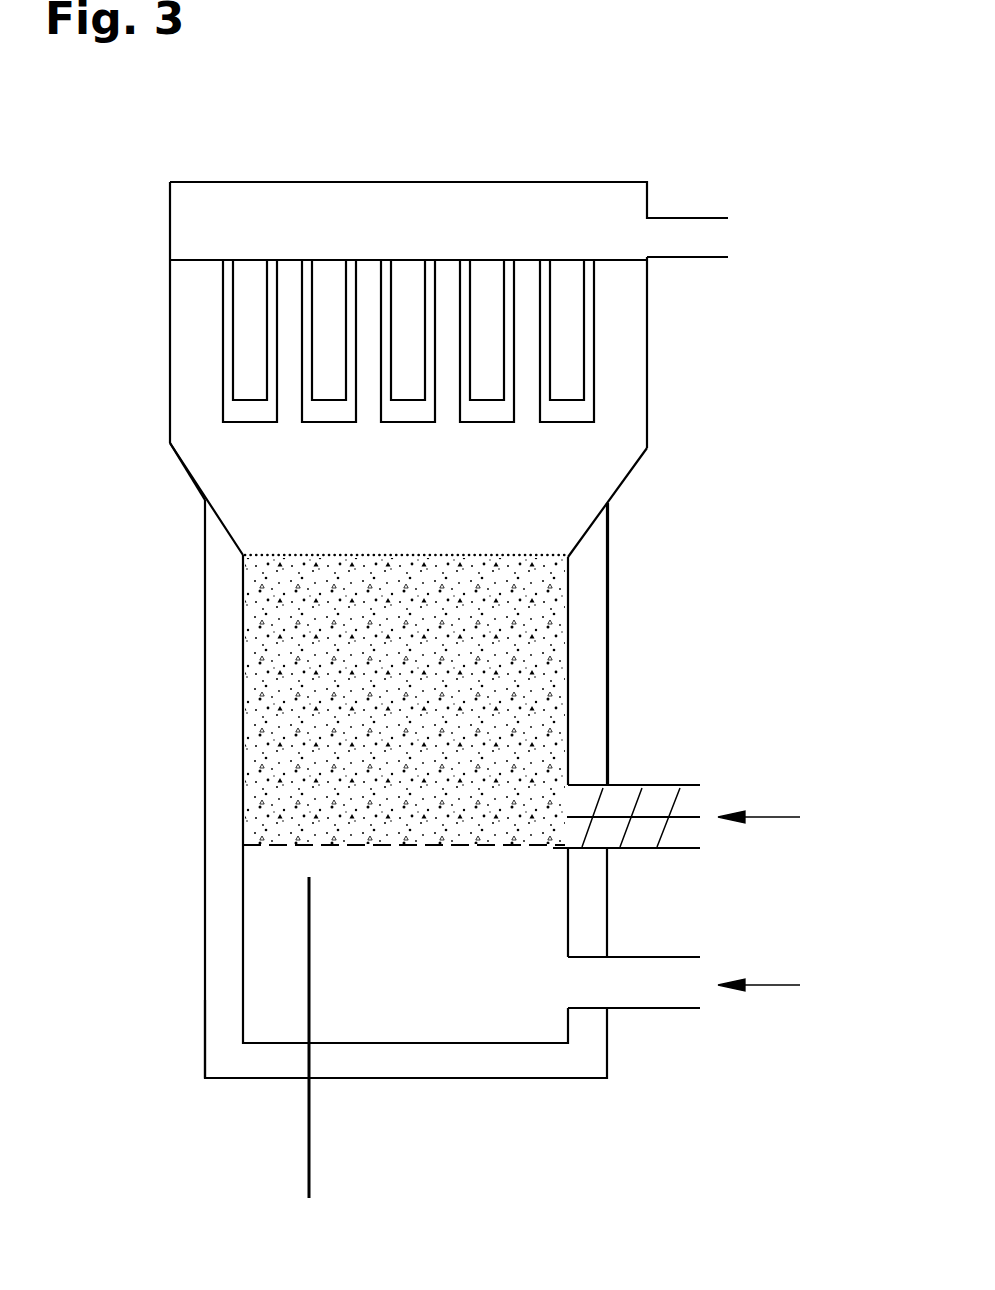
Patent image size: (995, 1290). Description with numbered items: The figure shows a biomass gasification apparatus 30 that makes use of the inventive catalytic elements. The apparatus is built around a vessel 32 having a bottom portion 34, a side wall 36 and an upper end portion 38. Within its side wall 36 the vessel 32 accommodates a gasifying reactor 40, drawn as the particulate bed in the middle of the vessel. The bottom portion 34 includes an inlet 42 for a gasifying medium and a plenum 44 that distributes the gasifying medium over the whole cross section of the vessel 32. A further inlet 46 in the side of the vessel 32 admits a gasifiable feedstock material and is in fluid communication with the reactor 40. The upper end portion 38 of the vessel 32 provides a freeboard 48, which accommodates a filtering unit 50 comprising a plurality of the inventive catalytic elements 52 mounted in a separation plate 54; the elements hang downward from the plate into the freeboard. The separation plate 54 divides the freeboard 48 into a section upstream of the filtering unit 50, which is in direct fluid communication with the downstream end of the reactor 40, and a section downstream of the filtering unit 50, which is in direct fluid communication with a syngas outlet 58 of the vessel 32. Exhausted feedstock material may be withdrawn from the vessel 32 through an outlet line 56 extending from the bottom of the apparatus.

The gasification apparatus 30 is at (692, 120).
The vessel 32 is at (186, 499).
The bottom portion 34 is at (199, 1013).
The side wall 36 is at (243, 742).
The upper end portion 38 is at (275, 182).
The gasifying reactor 40 is at (392, 712).
The inlet 42 is at (683, 1010).
The plenum 44 is at (390, 1000).
The inlet 46 is at (684, 784).
The freeboard 48 is at (322, 515).
The filtering unit 50 is at (368, 258).
The catalytic elements 52 is at (223, 338).
The separation plate 54 is at (204, 258).
The outlet line 56 is at (308, 1157).
The syngas outlet 58 is at (717, 217).